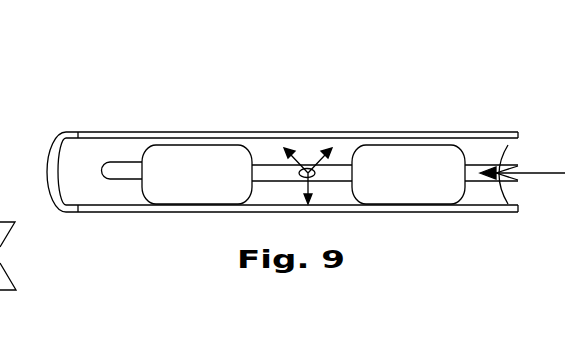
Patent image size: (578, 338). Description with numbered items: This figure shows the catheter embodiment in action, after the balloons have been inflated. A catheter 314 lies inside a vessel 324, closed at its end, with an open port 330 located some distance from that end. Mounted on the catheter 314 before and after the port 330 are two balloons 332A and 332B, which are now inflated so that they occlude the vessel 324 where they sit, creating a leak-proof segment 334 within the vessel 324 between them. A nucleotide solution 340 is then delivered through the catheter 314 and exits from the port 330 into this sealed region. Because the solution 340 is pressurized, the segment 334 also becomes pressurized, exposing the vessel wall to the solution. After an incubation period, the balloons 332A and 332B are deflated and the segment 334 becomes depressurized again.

The vessel 324 is at (77, 131).
The catheter 314 is at (128, 167).
The balloon 332A is at (193, 152).
The leak-proof segment 334 is at (272, 153).
The open port 330 is at (308, 173).
The balloon 332B is at (404, 146).
The nucleotide solution 340 is at (545, 173).